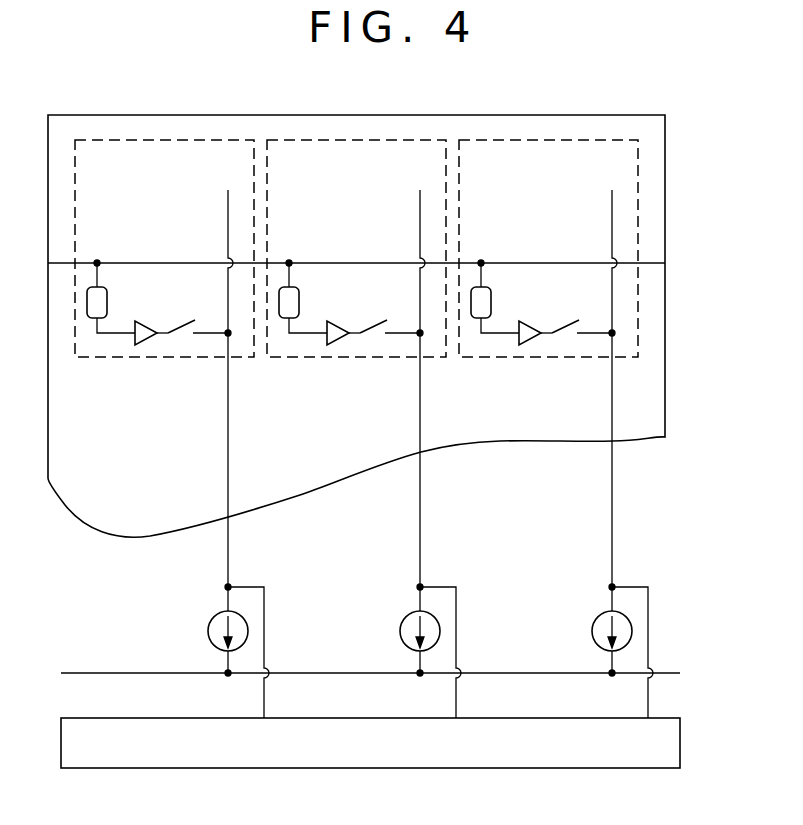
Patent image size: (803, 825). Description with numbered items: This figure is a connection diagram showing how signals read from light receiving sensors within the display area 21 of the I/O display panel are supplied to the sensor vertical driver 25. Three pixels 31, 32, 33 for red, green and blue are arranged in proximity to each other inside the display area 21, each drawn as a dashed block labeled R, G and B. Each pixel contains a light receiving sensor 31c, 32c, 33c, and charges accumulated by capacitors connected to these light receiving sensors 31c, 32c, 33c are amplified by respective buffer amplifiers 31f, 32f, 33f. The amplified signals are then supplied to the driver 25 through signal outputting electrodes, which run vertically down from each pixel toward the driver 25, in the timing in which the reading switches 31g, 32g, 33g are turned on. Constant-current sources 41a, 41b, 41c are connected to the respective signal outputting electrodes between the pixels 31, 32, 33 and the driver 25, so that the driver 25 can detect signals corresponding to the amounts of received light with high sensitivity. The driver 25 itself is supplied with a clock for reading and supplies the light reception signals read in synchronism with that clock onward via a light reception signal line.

The display area 21 is at (666, 128).
The sensor vertical driver 25 is at (681, 744).
The pixel 31 is at (166, 139).
The pixel 32 is at (358, 139).
The pixel 33 is at (550, 139).
The light receiving sensor 31c is at (86, 322).
The light receiving sensor 32c is at (278, 322).
The light receiving sensor 33c is at (470, 322).
The buffer amplifier 31f is at (146, 345).
The buffer amplifier 32f is at (338, 345).
The buffer amplifier 33f is at (530, 345).
The reading switch 31g is at (185, 337).
The reading switch 32g is at (377, 337).
The reading switch 33g is at (569, 337).
The constant-current source 41a is at (208, 631).
The constant-current source 41b is at (400, 631).
The constant-current source 41c is at (592, 631).